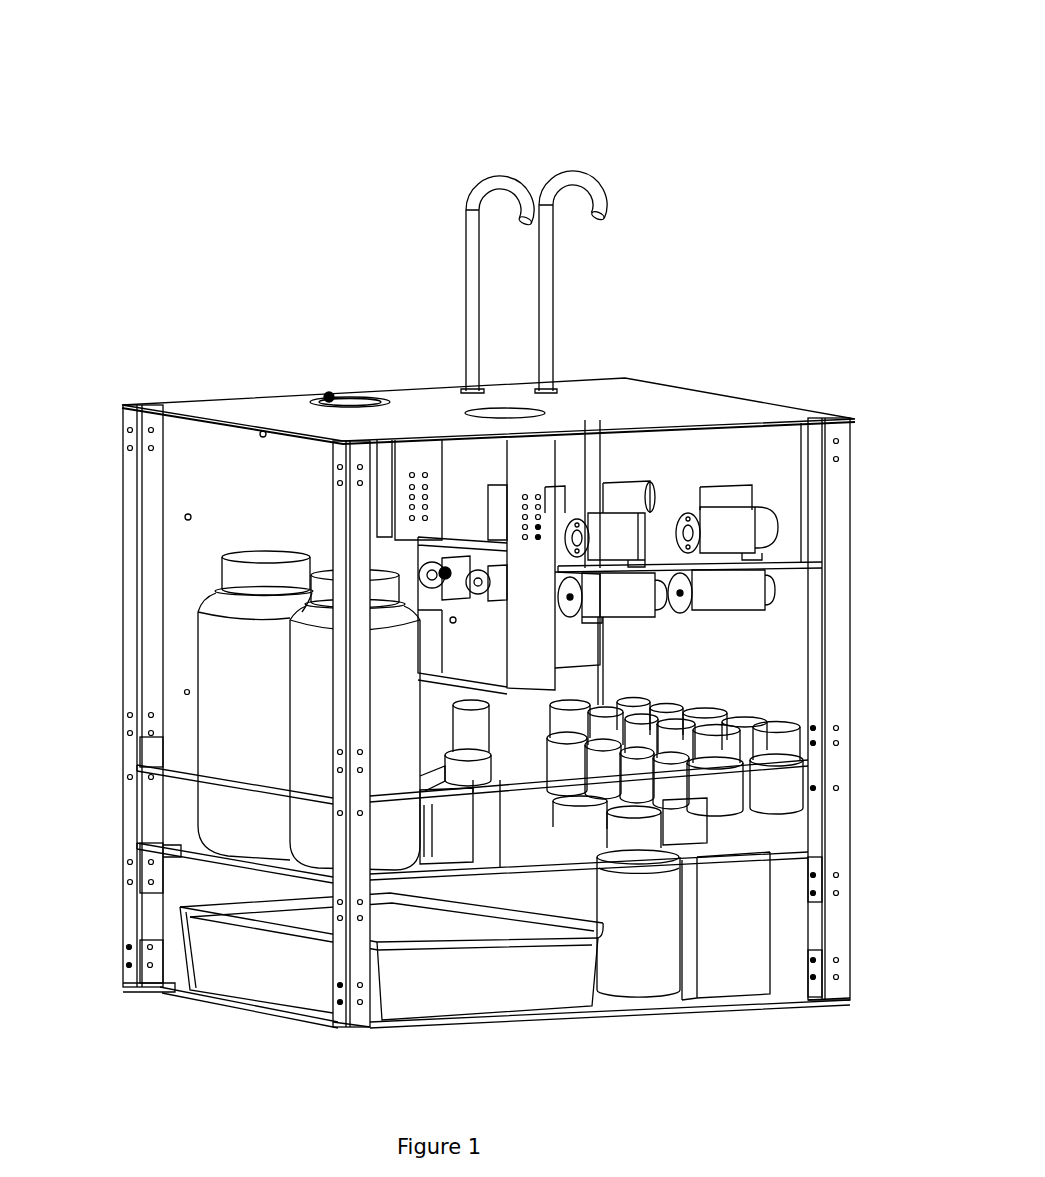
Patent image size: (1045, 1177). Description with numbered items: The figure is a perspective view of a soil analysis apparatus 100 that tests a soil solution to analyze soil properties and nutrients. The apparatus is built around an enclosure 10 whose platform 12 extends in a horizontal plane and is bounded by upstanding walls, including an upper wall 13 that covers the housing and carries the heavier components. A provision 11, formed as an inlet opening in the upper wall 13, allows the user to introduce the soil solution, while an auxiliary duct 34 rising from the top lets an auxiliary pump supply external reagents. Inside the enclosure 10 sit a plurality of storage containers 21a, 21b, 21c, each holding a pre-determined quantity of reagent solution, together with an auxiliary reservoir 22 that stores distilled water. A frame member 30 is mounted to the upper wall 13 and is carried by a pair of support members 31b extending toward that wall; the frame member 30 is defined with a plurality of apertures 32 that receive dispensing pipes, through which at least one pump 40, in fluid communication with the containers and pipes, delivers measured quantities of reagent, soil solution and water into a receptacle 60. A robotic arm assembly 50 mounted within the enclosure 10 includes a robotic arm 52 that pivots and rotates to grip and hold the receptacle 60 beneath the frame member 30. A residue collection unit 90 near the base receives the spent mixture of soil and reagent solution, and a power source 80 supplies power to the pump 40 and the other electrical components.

The soil analysis apparatus 100 is at (491, 555).
The enclosure 10 is at (238, 406).
The provision 11 is at (488, 455).
The platform 12 is at (173, 858).
The upper wall 13 is at (277, 425).
The storage container 21a is at (657, 694).
The storage container 21b is at (640, 968).
The storage container 21c is at (213, 711).
The auxiliary reservoir 22 is at (305, 827).
The frame member 30 is at (562, 647).
The support member 31b is at (527, 466).
The apertures 32 is at (542, 490).
The auxiliary duct 34 is at (568, 170).
The pump 40 is at (682, 473).
The robotic arm assembly 50 is at (318, 691).
The robotic arm 52 is at (477, 744).
The receptacle 60 is at (488, 813).
The power source 80 is at (730, 910).
The residue collection unit 90 is at (405, 997).